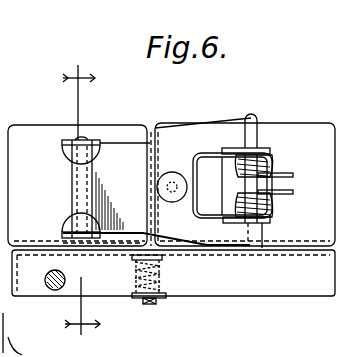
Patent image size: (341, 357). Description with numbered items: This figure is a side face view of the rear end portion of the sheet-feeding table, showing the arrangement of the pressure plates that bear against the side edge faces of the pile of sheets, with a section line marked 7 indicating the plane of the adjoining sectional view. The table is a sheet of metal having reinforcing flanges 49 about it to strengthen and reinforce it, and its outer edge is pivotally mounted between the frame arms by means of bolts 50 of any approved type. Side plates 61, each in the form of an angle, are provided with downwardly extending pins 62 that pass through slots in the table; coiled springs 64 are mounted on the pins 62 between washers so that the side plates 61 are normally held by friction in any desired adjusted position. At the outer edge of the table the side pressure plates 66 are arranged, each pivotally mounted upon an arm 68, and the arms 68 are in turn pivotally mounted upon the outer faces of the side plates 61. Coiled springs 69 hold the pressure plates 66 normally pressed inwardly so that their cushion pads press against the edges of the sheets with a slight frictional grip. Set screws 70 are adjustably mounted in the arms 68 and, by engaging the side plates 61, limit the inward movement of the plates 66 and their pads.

The reinforcing flanges 49 is at (309, 284).
The bolts 50 is at (50, 270).
The side plates 61 is at (281, 133).
The pins 62 is at (150, 300).
The coiled springs 64 is at (161, 278).
The side pressure plates 66 is at (32, 131).
The arm 68 is at (115, 153).
The coiled springs 69 is at (263, 165).
The set screws 70 is at (173, 172).
The section line 7- 7 is at (81, 200).